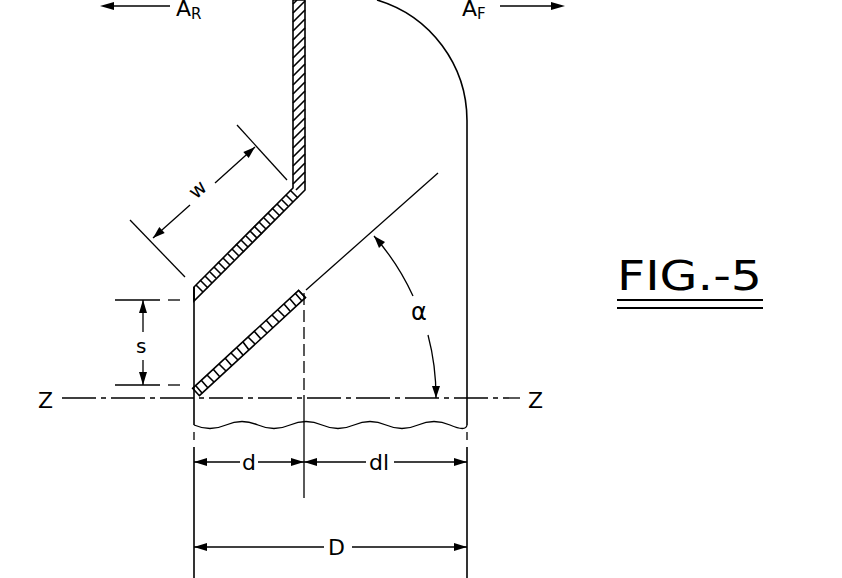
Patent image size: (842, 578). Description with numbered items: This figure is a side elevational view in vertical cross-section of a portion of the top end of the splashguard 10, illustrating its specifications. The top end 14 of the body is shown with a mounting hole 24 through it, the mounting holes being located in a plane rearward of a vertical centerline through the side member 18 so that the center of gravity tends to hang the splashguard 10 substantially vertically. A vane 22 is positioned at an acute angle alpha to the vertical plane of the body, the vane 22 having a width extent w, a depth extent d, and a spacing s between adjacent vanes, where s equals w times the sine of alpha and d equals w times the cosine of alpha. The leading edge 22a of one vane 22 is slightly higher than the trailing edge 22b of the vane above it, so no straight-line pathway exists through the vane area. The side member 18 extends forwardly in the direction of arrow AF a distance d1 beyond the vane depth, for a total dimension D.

The splashguard 10 is at (514, 289).
The top end 14 is at (249, 150).
The side member 18 is at (469, 203).
The vane 22 is at (210, 300).
The leading edge 22a is at (297, 290).
The trailing edge 22b is at (124, 276).
The mounting hole 24 is at (293, 92).